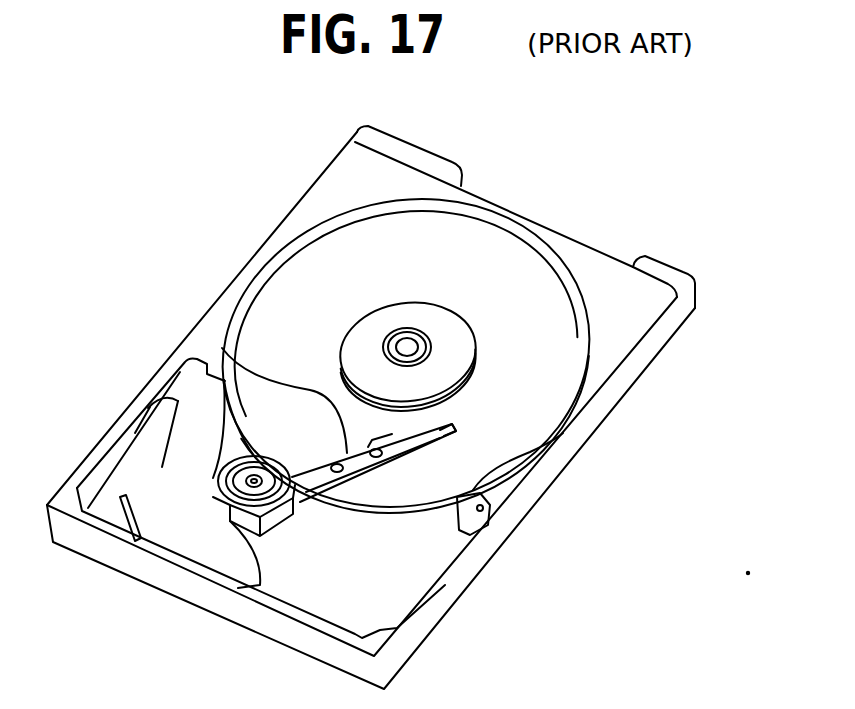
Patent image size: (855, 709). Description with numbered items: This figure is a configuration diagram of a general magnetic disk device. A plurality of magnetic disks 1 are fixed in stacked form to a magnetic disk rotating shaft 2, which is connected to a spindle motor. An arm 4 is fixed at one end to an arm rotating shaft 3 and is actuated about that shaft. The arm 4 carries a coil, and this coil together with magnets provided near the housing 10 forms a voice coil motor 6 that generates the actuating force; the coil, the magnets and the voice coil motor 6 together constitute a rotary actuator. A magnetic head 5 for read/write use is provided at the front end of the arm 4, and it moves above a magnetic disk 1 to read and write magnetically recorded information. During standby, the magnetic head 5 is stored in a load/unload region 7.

The magnetic disk 1 is at (498, 257).
The magnetic disk rotating shaft 2 is at (407, 346).
The arm rotating shaft 3 is at (228, 478).
The arm 4 is at (222, 350).
The magnetic head 5 is at (430, 443).
The voice coil motor 6 is at (162, 470).
The load/unload region 7 is at (473, 517).
The housing 10 is at (623, 318).